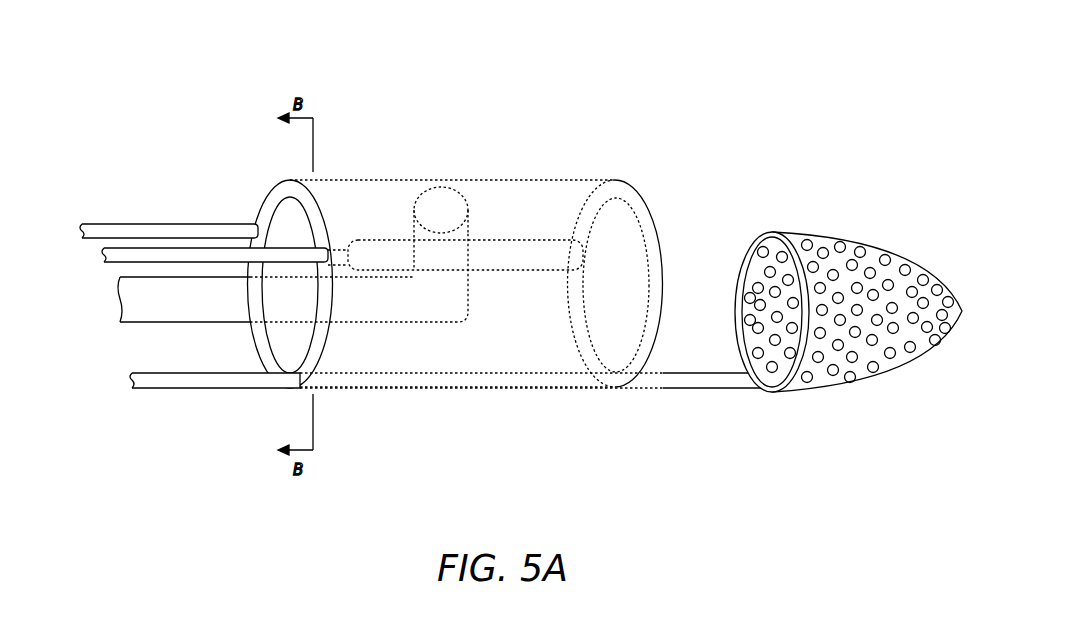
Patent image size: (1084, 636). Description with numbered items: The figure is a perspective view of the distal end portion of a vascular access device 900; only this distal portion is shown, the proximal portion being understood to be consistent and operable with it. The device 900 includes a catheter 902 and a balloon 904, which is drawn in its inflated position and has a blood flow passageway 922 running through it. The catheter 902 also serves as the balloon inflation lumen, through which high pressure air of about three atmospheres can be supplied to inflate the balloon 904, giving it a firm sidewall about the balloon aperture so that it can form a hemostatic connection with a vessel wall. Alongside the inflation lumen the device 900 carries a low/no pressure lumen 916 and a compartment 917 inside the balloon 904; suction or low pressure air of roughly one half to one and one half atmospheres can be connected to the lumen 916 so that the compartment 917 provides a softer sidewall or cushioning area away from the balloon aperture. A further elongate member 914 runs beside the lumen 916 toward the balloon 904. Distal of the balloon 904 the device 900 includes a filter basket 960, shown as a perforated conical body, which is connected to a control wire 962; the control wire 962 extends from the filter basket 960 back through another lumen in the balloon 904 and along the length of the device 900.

The vascular access device 900 is at (592, 54).
The catheter 902 is at (157, 312).
The balloon 904 is at (555, 197).
The first rod 914 is at (120, 232).
The low/no pressure lumen 916 is at (187, 257).
The compartment 917 is at (373, 248).
The blood flow passageway 922 is at (290, 343).
The filter basket 960 is at (815, 401).
The control wire 962 is at (198, 390).